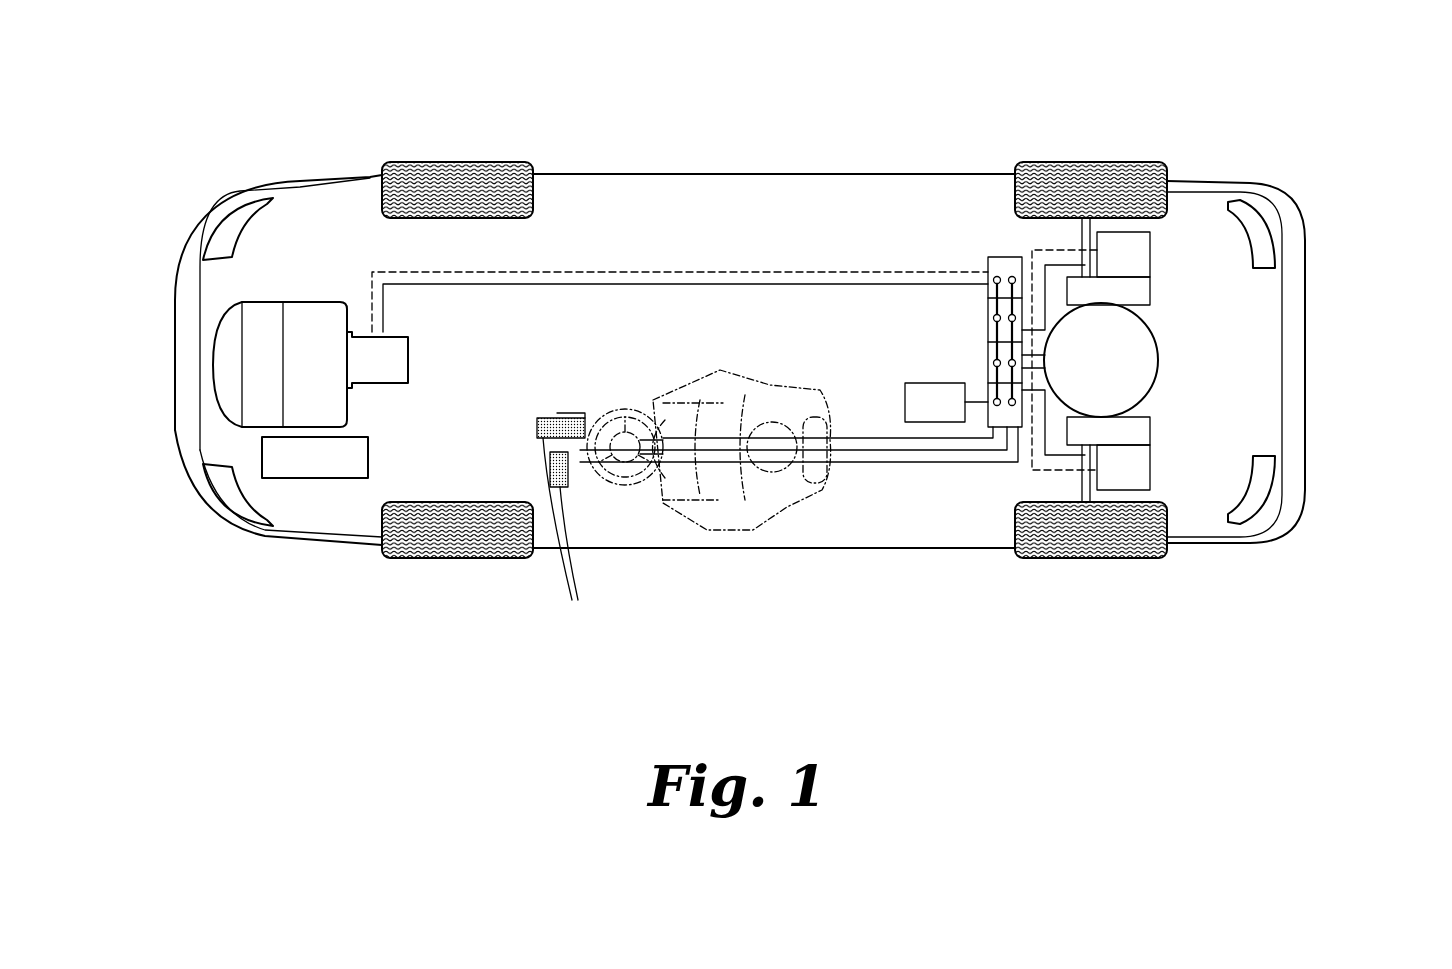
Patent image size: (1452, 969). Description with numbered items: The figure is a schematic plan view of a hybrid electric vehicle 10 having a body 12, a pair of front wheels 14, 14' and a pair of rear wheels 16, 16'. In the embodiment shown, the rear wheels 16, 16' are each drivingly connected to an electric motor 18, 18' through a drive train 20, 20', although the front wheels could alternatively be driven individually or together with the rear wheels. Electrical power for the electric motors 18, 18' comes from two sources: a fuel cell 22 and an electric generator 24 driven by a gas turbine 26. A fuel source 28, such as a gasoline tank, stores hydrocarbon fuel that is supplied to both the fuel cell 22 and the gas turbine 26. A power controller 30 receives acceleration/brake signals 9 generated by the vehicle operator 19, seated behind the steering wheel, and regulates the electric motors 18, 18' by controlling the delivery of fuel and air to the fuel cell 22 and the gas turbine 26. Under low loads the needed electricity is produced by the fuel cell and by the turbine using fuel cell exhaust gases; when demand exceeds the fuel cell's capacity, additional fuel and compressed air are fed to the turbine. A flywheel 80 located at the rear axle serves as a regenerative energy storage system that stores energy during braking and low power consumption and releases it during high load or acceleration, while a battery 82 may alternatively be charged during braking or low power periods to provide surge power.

The hybrid electric vehicle 10 is at (723, 142).
The acceleration/brake signals 9 is at (572, 600).
The body 12 is at (813, 528).
The front wheel 14 is at (452, 585).
The front wheel 14' is at (457, 135).
The rear wheel 16 is at (1089, 585).
The rear wheel 16' is at (1091, 135).
The electric motor 18 is at (1156, 556).
The electric motor 18' is at (1147, 165).
The vehicle operator 19 is at (688, 500).
The drive train 20 is at (1247, 438).
The drive train 20' is at (1250, 274).
The fuel cell 22 is at (247, 323).
The electric generator 24 is at (365, 343).
The gas turbine 26 is at (313, 317).
The fuel source 28 is at (320, 483).
The power controller 30 is at (995, 260).
The flywheel 80 is at (1148, 360).
The battery 82 is at (936, 422).